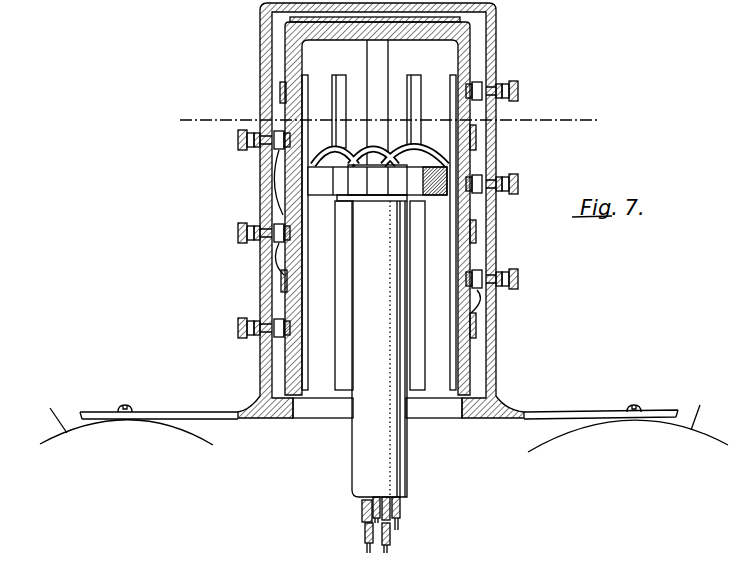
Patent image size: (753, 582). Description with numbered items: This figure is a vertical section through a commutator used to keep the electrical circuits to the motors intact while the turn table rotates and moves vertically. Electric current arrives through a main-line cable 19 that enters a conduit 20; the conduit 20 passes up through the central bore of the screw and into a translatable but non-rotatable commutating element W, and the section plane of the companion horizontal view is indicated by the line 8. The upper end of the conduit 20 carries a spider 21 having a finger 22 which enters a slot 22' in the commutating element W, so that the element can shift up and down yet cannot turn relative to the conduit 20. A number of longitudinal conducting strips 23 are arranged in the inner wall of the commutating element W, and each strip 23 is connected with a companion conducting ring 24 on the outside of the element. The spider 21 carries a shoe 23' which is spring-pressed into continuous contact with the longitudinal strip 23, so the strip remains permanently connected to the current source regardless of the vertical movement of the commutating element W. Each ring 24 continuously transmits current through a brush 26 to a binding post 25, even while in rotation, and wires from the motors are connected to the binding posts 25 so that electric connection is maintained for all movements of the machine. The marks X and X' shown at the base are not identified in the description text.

The section line 8- 8 is at (196, 100).
The main-line cable 19 is at (405, 513).
The conduit 20 is at (358, 475).
The spider 21 is at (330, 189).
The finger 22 is at (380, 293).
The slot 22' is at (394, 102).
The longitudinal conducting strip 23 is at (375, 103).
The shoe 23' is at (380, 186).
The conducting ring 24 is at (281, 90).
The binding post 25 is at (240, 147).
The brush 26 is at (261, 180).
The commutating element W is at (490, 358).
The mounting surface X is at (626, 417).
The mounting surface X' is at (125, 417).